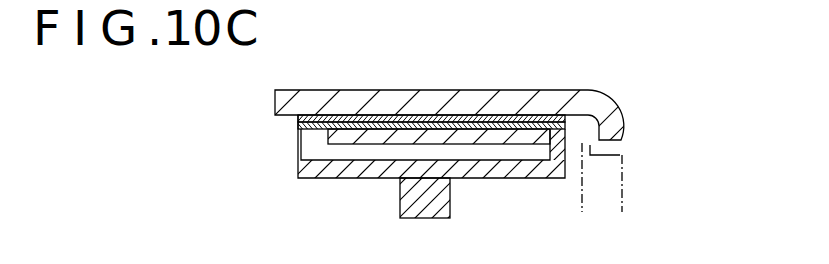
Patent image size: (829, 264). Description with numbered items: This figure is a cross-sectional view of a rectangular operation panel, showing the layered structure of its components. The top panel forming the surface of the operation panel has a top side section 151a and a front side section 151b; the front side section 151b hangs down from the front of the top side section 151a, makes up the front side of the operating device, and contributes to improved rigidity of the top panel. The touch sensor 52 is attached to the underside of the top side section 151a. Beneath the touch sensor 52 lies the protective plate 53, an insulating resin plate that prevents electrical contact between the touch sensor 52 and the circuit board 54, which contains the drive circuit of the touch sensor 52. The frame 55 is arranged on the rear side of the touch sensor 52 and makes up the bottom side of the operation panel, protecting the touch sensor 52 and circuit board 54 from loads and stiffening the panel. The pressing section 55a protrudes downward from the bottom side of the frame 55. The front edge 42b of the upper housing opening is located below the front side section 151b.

The top side section 151a is at (435, 110).
The front side section 151b is at (615, 127).
The touch sensor 52 is at (355, 120).
The protective plate 53 is at (532, 126).
The circuit board 54 is at (375, 138).
The frame 55 is at (324, 168).
The pressing section 55a is at (443, 202).
The front edge of the opening 42b is at (607, 155).